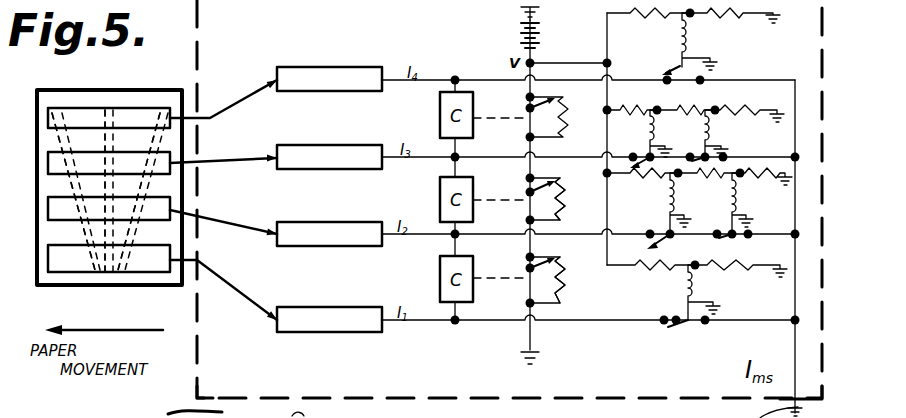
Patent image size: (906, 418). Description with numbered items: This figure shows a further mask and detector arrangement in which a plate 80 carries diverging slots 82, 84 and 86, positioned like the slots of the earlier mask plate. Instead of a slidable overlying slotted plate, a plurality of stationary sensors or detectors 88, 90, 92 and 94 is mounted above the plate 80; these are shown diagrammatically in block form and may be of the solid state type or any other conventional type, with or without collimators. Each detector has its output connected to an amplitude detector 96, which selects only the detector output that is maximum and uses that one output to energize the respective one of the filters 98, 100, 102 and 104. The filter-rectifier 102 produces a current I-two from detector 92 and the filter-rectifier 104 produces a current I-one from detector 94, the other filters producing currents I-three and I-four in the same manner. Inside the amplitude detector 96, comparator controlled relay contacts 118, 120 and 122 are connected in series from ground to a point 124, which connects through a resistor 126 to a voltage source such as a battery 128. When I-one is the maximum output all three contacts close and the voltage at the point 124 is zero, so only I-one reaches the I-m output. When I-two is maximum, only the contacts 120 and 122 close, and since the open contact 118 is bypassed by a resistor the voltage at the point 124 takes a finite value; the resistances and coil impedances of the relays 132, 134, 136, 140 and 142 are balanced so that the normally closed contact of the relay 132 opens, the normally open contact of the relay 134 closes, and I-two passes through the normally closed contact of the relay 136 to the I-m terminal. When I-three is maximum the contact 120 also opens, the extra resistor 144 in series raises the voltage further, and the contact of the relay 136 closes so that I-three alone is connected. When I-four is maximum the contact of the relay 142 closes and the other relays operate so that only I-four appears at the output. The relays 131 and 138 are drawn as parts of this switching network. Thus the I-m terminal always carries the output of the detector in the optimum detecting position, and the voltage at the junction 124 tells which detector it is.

The plate 80 is at (118, 284).
The diverging slot 82 is at (60, 140).
The diverging slot 84 is at (112, 140).
The diverging slot 86 is at (150, 147).
The stationary sensor 88 is at (50, 118).
The stationary sensor 90 is at (50, 162).
The stationary sensor 92 is at (50, 208).
The stationary sensor 94 is at (50, 255).
The amplitude detector 96 is at (252, 4).
The filter 98 is at (318, 67).
The filter 100 is at (310, 145).
The filter-rectifier 102 is at (314, 222).
The filter-rectifier 104 is at (303, 308).
The comparator controlled relay contact 118 is at (527, 283).
The comparator controlled relay contact 120 is at (527, 208).
The comparator controlled relay contact 122 is at (527, 122).
The point 124 is at (535, 63).
The resistor 126 is at (527, 47).
The battery 128 is at (540, 30).
The resistor 131 is at (561, 290).
The relay 132 is at (676, 292).
The relay 134 is at (660, 213).
The relay 136 is at (720, 212).
The relay 138 is at (642, 139).
The relay 140 is at (722, 122).
The relay 142 is at (670, 50).
The extra resistor 144 is at (563, 198).